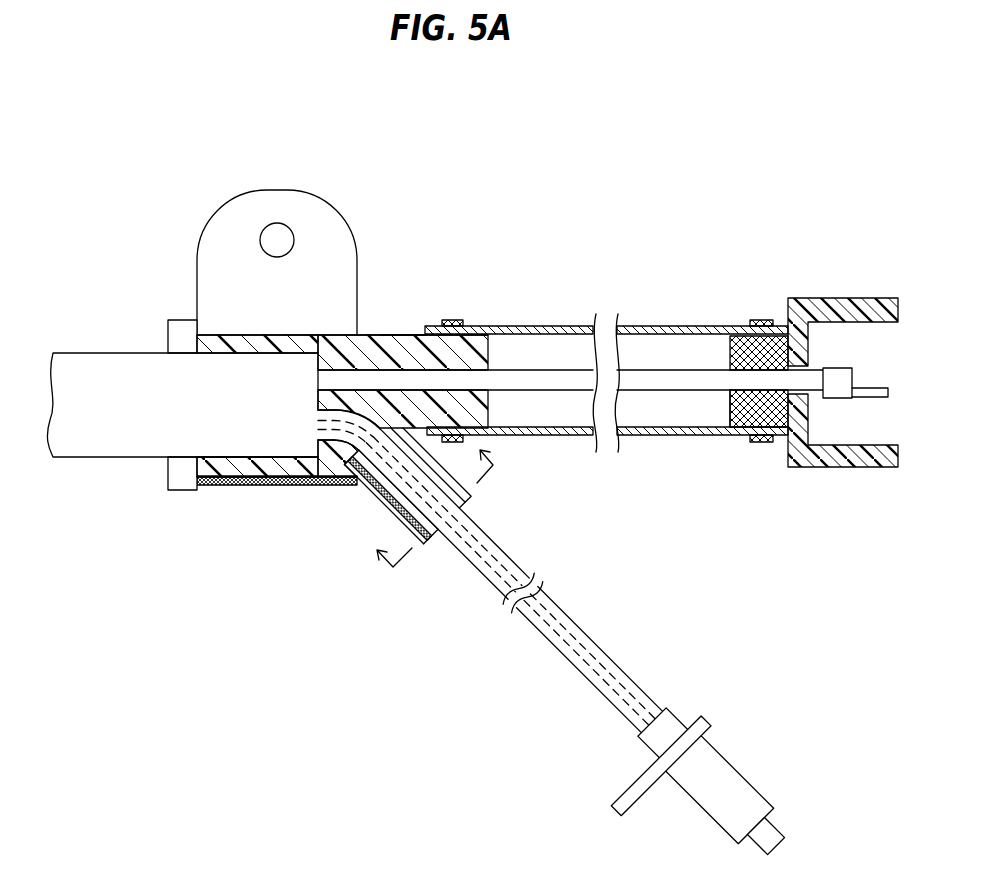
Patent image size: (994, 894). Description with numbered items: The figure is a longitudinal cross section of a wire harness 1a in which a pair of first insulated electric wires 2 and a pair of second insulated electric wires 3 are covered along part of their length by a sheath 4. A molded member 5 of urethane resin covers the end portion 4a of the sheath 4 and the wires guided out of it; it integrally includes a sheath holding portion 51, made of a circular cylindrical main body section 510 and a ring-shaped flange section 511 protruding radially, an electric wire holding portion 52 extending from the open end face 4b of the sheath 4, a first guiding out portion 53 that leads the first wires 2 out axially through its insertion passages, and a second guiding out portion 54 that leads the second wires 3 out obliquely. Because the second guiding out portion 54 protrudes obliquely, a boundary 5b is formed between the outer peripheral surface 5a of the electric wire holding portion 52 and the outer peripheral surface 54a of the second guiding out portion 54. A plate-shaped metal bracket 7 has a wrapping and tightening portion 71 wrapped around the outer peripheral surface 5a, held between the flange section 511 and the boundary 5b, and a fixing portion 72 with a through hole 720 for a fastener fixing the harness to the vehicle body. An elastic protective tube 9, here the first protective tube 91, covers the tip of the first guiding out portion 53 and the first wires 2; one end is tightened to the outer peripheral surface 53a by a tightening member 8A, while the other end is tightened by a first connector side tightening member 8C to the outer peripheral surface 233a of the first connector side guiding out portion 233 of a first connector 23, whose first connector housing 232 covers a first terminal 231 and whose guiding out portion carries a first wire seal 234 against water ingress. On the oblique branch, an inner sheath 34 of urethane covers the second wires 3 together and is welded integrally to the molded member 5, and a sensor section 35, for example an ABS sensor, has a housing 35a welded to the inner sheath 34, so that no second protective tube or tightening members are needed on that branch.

The wire harness 1a is at (566, 172).
The first insulated electric wires 2 is at (510, 378).
The second insulated electric wires 3 is at (492, 565).
The inner sheath 34 is at (543, 638).
The sensor section 35 is at (793, 762).
The housing 35a is at (717, 757).
The sheath 4 is at (127, 448).
The end portion 4a is at (222, 447).
The open end face 4b is at (318, 440).
The molded member 5 is at (368, 317).
The outer peripheral surface 5a is at (300, 338).
The boundary 5b is at (347, 485).
The electric wire holding portion 52 is at (345, 350).
The first guiding out portion 53 is at (378, 347).
The outer peripheral surface 53a is at (398, 335).
The second guiding out portion 54 is at (363, 485).
The outer peripheral surface 54a is at (375, 498).
The bracket 7 is at (275, 190).
The wrapping and tightening portion 71 is at (267, 485).
The fixing portion 72 is at (342, 220).
The through hole 720 is at (287, 223).
The sheath holding portion 51 is at (97, 283).
The main body section 510 is at (215, 343).
The flange section 511 is at (177, 338).
The tightening member 8A is at (465, 322).
The first connector side tightening member 8C is at (758, 320).
The elastic protective tube 9 is at (678, 308).
The first protective tube 91 is at (677, 437).
The first connector 23 is at (880, 281).
The first terminal 231 is at (838, 398).
The first connector housing 232 is at (872, 458).
The first connector side guiding out portion 233 is at (750, 433).
The outer peripheral surface 233a is at (778, 438).
The first wire seal 234 is at (728, 432).